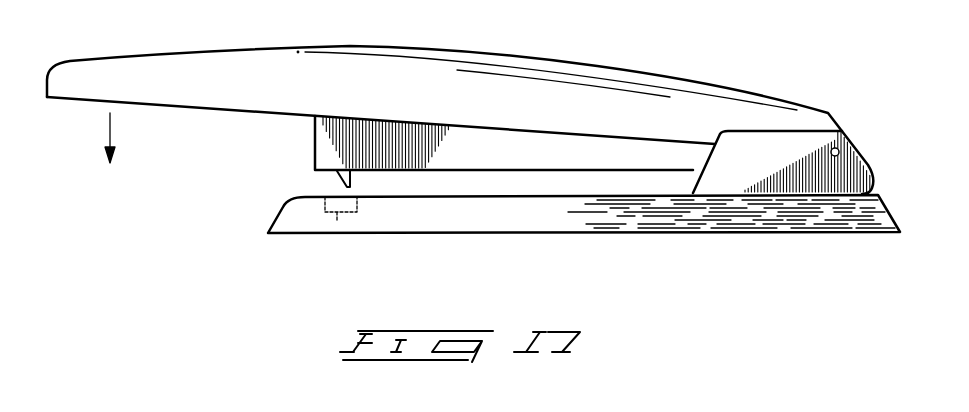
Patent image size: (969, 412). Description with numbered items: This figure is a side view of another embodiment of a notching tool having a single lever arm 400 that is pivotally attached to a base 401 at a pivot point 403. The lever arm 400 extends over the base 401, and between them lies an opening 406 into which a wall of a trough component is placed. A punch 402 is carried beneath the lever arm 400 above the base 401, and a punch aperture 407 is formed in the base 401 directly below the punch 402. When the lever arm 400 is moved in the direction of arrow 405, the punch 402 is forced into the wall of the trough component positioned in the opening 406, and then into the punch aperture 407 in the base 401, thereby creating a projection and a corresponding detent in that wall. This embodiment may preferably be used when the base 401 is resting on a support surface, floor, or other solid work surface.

The lever arm 400 is at (224, 67).
The base 401 is at (310, 220).
The punch 402 is at (337, 173).
The pivot point 403 is at (843, 144).
The arrow 405 is at (110, 130).
The opening 406 is at (532, 185).
The punch aperture 407 is at (340, 235).